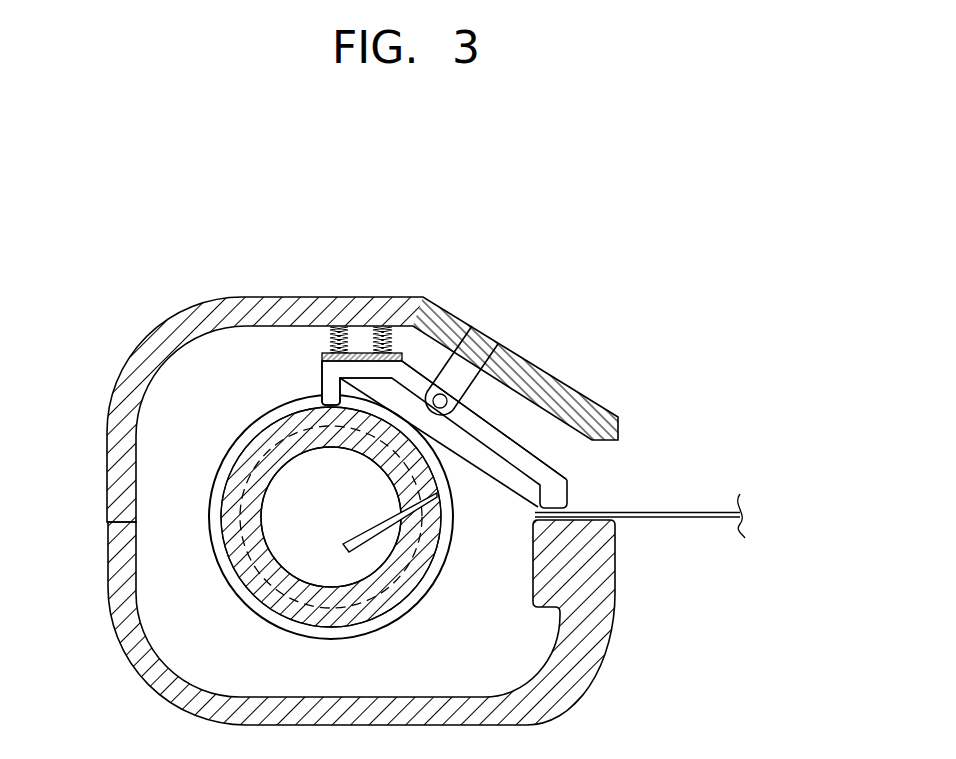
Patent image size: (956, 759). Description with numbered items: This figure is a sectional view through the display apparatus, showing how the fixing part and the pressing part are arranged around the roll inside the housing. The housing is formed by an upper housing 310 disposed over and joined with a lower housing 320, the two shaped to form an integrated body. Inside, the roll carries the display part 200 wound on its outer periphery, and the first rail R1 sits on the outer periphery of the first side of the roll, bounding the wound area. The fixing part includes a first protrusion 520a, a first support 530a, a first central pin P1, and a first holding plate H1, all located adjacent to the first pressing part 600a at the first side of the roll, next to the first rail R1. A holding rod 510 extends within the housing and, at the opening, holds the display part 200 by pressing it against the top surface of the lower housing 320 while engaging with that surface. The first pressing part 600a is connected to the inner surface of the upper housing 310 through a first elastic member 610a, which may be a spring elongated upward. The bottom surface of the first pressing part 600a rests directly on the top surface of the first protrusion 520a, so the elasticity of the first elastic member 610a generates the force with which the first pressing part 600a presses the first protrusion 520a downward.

The upper housing 310 is at (110, 450).
The lower housing 320 is at (118, 570).
The first rail R1 is at (253, 468).
The display part 200 is at (692, 508).
The holding rod 510 is at (567, 490).
The first support 530a is at (505, 445).
The first protrusion 520a is at (320, 383).
The first pressing part 600a is at (322, 357).
The first elastic member 610a is at (384, 330).
The first central pin P1 is at (446, 401).
The first holding plate H1 is at (449, 367).